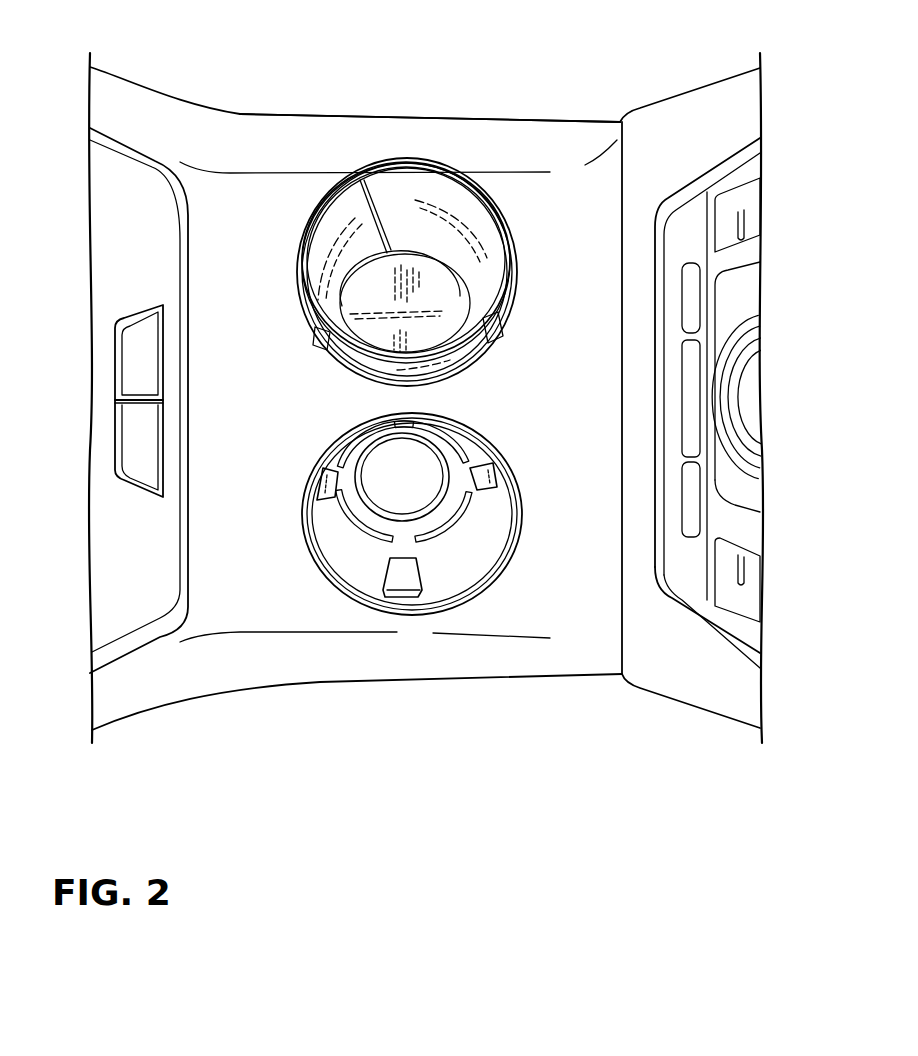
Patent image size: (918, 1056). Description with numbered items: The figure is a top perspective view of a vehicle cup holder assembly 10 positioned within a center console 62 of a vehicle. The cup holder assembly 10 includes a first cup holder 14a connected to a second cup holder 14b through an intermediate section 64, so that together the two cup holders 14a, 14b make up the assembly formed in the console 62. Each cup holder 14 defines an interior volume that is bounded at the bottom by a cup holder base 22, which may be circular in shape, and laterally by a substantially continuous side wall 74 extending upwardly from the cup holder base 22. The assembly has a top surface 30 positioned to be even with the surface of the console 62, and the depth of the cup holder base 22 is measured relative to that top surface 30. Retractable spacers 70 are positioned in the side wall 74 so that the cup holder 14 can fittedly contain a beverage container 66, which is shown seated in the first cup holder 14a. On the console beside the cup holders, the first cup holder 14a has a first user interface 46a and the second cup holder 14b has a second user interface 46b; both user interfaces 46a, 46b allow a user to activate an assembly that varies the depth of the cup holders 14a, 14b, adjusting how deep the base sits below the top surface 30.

The vehicle cup holder assembly 10 is at (342, 165).
The console 62 is at (437, 90).
The beverage container 66 is at (490, 198).
The first cup holder 14a is at (508, 212).
The top surface 30 is at (520, 255).
The intermediate section 64 is at (400, 398).
The first user interface 46a is at (136, 353).
The second user interface 46b is at (140, 442).
The cup holder base 22 is at (437, 517).
The cup holder 14 is at (300, 582).
The side wall 74 is at (470, 572).
The second cup holder 14b is at (478, 547).
The retractable spacers 70 is at (400, 588).